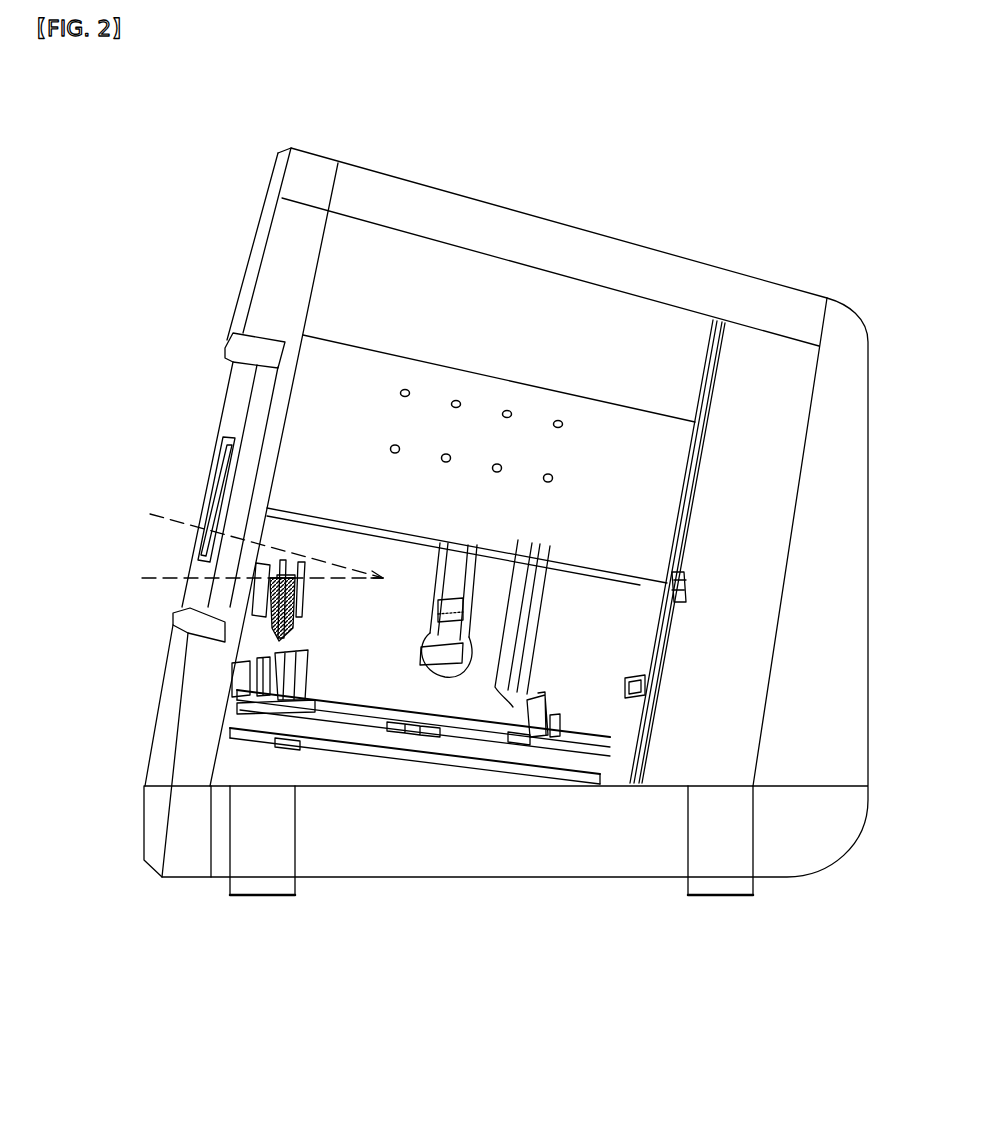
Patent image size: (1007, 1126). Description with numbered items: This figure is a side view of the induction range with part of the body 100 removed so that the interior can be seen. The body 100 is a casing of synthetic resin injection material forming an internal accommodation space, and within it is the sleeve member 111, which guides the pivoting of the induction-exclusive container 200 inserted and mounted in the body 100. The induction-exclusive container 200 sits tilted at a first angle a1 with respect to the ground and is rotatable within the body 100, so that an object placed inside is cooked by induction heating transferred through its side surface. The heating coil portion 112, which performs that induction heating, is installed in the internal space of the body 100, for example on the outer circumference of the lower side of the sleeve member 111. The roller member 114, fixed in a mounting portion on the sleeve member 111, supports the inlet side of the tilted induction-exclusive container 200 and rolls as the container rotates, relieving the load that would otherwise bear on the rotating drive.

The body 100 is at (642, 263).
The sleeve member 111 is at (363, 390).
The heating coil portion 112 is at (347, 737).
The roller member 114 is at (277, 642).
The induction-exclusive container 200 is at (245, 473).
The first angle a1 is at (170, 522).